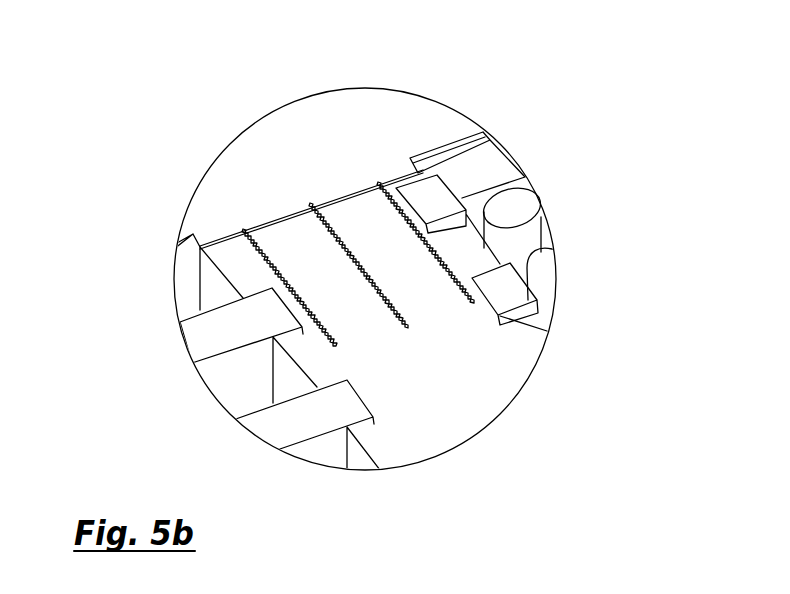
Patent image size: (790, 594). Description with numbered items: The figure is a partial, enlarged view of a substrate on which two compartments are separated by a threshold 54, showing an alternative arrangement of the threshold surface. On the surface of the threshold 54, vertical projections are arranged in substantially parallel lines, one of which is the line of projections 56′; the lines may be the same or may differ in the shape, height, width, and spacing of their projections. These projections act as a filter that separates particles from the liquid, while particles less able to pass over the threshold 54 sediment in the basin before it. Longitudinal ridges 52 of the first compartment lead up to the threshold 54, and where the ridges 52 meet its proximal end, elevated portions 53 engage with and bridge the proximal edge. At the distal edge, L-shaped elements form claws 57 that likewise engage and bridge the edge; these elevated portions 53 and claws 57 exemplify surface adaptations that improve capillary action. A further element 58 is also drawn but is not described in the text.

The ridges 52 is at (200, 340).
The elevated portions 53 is at (357, 392).
The threshold 54 is at (448, 377).
The line of vertical projections 56′ is at (257, 232).
The claws 57 is at (507, 292).
The cylindrical pin 58 is at (508, 216).